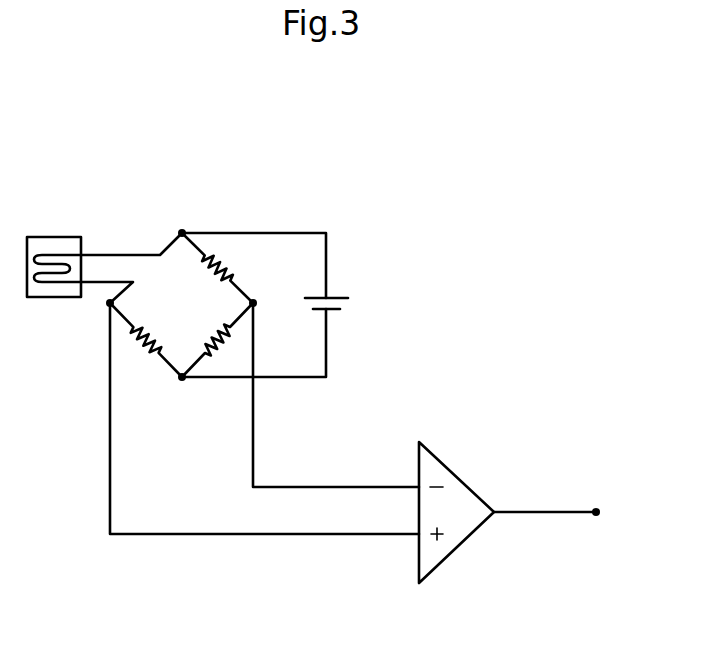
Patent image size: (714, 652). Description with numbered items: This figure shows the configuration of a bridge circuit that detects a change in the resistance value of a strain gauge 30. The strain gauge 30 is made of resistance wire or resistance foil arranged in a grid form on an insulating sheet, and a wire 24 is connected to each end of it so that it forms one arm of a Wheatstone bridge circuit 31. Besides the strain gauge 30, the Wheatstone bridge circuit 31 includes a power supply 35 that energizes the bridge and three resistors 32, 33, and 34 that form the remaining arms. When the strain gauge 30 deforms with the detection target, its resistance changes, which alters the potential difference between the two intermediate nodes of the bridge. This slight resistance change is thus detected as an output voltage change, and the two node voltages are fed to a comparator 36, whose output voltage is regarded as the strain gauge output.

The wire 24 is at (117, 255).
The strain gauge 30 is at (57, 226).
The Wheatstone bridge circuit 31 is at (193, 278).
The resistor 32 is at (234, 260).
The resistor 33 is at (198, 329).
The resistor 34 is at (139, 358).
The power supply (battery) 35 is at (337, 281).
The comparator 36 is at (470, 471).